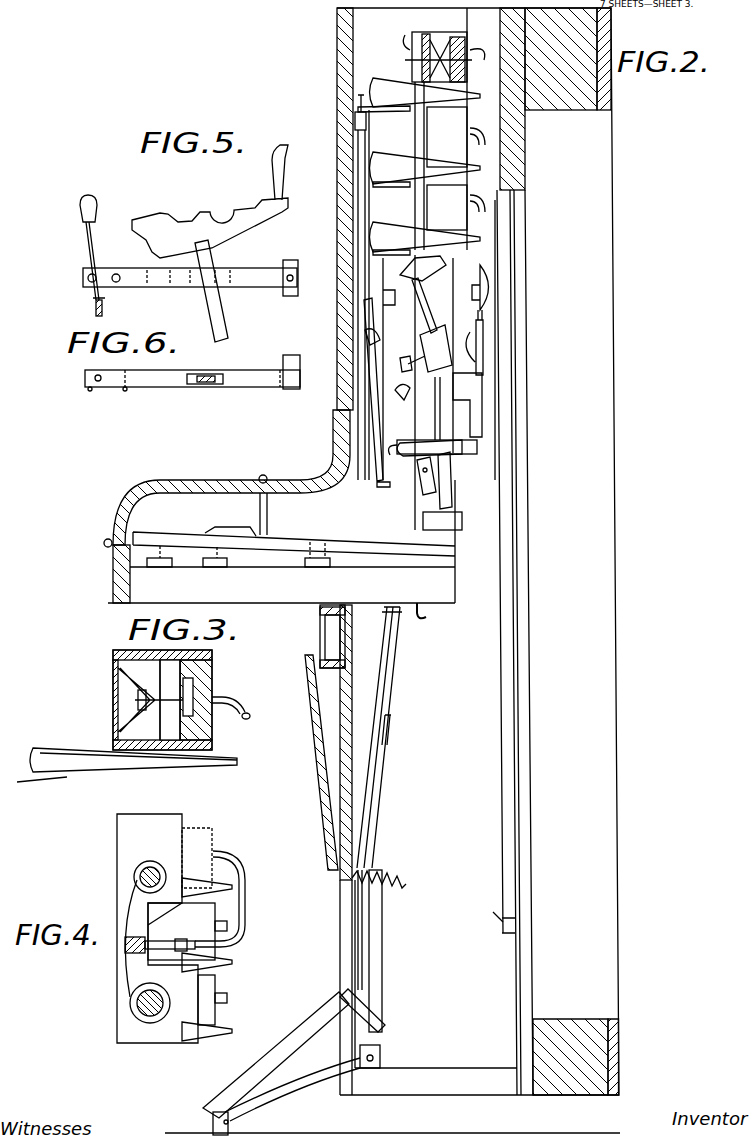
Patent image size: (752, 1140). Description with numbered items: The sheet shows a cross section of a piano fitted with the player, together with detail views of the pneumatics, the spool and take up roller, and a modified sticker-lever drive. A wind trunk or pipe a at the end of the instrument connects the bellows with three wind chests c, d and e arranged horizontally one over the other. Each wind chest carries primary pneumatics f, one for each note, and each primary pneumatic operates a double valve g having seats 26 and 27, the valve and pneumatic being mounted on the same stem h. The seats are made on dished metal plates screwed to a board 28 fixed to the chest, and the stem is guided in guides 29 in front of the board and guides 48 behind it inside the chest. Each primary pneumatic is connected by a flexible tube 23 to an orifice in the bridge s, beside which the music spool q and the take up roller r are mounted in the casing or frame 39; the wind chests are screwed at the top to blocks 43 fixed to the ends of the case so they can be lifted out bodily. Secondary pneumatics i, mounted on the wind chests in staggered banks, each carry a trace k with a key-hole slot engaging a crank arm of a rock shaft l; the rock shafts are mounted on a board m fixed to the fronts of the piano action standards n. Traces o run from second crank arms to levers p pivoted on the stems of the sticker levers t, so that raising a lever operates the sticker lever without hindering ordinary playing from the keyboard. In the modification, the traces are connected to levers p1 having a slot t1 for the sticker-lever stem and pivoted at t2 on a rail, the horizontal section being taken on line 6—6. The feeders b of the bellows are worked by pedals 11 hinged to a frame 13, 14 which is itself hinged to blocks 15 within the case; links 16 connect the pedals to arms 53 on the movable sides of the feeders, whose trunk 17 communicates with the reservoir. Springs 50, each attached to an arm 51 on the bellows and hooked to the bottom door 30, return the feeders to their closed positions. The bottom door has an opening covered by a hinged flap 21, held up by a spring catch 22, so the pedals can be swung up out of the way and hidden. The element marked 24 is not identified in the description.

In FIG. 2, the pedals 11 is at (340, 1002).
In FIG. 2, the pedal frame 13 is at (208, 1115).
In FIG. 2, the pedal frame 14 is at (314, 1073).
In FIG. 2, the blocks 15 is at (380, 1052).
In FIG. 2, the connecting rods or links 16 is at (372, 1010).
In FIG. 2, the trunk of the feeders 17 is at (320, 628).
In FIG. 2, the flap 21 is at (322, 745).
In FIG. 2, the spring catch 22 is at (308, 657).
In FIG. 2, the flexible tube 23 is at (485, 138).
In FIG. 3, the flexible tube 23 is at (238, 702).
In FIG. 4, the flexible tube 23 is at (232, 868).
In FIG. 2, the key bed 24 is at (267, 591).
In FIG. 2, the valve seat 26 is at (410, 36).
In FIG. 3, the valve seat 26 is at (125, 700).
In FIG. 3, the valve seat 27 is at (180, 678).
In FIG. 3, the board 28 is at (135, 650).
In FIG. 2, the guides 29 is at (420, 70).
In FIG. 3, the guides 29 is at (112, 690).
In FIG. 2, the bottom door 30 is at (346, 695).
In FIG. 4, the casing or frame 39 is at (157, 928).
In FIG. 2, the blocks 43 is at (487, 17).
In FIG. 3, the guides 48 is at (212, 728).
In FIG. 2, the springs 50 is at (399, 893).
In FIG. 2, the arm 51 is at (385, 874).
In FIG. 2, the arms 53 is at (382, 928).
In FIG. 5, the section line 6 is at (78, 262).
In FIG. 2, the wind trunk or pipe a is at (414, 58).
In FIG. 3, the wind trunk or pipe a is at (112, 668).
In FIG. 2, the feeders b is at (370, 675).
In FIG. 3, the wind chest c is at (139, 765).
In FIG. 4, the wind chest c is at (212, 838).
In FIG. 2, the wind chest d is at (447, 137).
In FIG. 4, the wind chest d is at (181, 931).
In FIG. 2, the wind chest e is at (447, 207).
In FIG. 4, the wind chest e is at (210, 980).
In FIG. 2, the primary pneumatics f is at (478, 44).
In FIG. 3, the primary pneumatics f is at (196, 695).
In FIG. 4, the primary pneumatics f is at (222, 895).
In FIG. 2, the double valve g is at (440, 40).
In FIG. 3, the valve stem h is at (162, 700).
In FIG. 2, the secondary pneumatics i is at (425, 165).
In FIG. 4, the secondary pneumatics i is at (232, 895).
In FIG. 2, the trace k is at (357, 203).
In FIG. 2, the rock shafts l is at (366, 338).
In FIG. 2, the board m is at (380, 300).
In FIG. 2, the piano action standards n is at (417, 314).
In FIG. 2, the traces o is at (372, 372).
In FIG. 5, the traces o is at (96, 255).
In FIG. 2, the levers p is at (426, 491).
In FIG. 5, the levers p1 is at (262, 282).
In FIG. 6, the levers p1 is at (221, 390).
In FIG. 4, the spool q is at (143, 920).
In FIG. 4, the take up roller r is at (170, 1003).
In FIG. 4, the bridge s is at (132, 937).
In FIG. 2, the sticker levers t is at (380, 464).
In FIG. 5, the sticker levers t is at (210, 201).
In FIG. 5, the slot t1 is at (193, 288).
In FIG. 6, the slot t1 is at (205, 384).
In FIG. 5, the pivot t2 is at (301, 278).